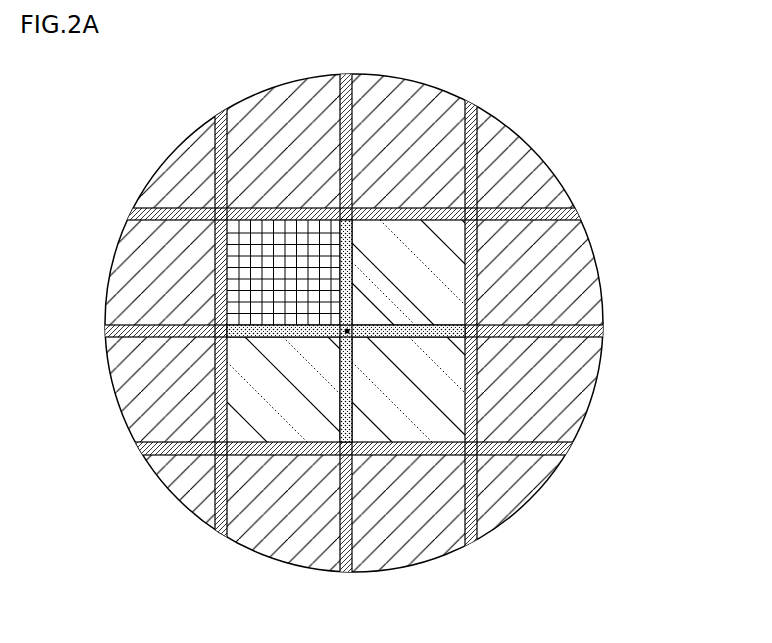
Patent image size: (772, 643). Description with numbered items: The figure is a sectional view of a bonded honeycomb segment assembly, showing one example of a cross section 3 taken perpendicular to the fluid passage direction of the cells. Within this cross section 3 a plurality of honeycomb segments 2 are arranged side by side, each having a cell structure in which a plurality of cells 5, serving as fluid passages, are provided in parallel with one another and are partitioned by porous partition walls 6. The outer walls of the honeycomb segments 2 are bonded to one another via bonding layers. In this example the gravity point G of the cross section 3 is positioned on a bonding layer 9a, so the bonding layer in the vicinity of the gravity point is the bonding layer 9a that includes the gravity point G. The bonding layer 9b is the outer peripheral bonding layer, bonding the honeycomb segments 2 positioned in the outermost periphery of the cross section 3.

The honeycomb segment 2 is at (517, 502).
The cross section 3 is at (726, 131).
The cell 5 is at (247, 317).
The porous partition wall 6 is at (226, 236).
The bonding layer 9a is at (600, 339).
The bonding layer 9b is at (346, 76).
The gravity point G is at (350, 331).